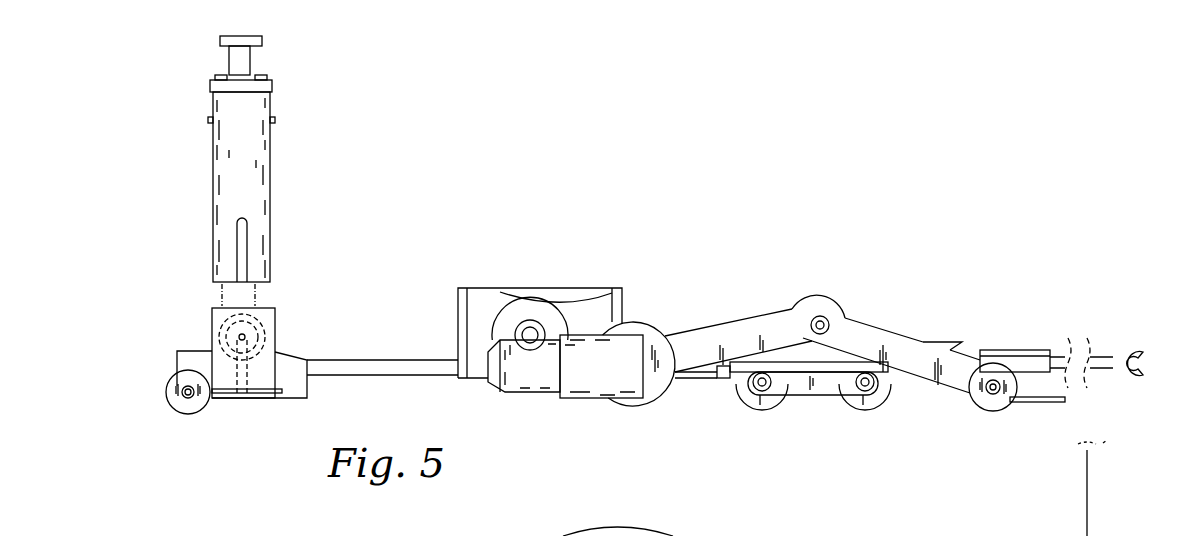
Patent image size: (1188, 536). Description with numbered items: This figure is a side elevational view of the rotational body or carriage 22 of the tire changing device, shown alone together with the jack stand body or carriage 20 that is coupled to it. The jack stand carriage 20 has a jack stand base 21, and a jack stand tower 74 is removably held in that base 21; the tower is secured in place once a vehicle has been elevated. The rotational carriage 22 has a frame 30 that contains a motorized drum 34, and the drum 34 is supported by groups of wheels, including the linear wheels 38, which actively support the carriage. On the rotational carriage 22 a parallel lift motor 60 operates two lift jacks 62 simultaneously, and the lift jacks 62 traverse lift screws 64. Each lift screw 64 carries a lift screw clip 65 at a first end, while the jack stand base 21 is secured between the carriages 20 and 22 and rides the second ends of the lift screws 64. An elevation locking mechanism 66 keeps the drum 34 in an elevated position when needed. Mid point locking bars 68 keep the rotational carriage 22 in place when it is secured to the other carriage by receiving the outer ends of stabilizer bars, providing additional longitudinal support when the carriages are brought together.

The jack stand body or carriage 20 is at (305, 243).
The jack stand base 21 is at (274, 323).
The rotational body or carriage 22 is at (682, 262).
The frame 30 is at (911, 338).
The motorized drum 34 is at (820, 297).
The linear wheels 38 is at (783, 406).
The parallel lift motor 60 is at (537, 300).
The lift jacks 62 is at (512, 393).
The lift screws 64 is at (397, 360).
The lift screw clip 65 is at (1127, 351).
The elevation locking mechanism 66 is at (943, 342).
The mid point locking bars 68 is at (1010, 350).
The jack stand tower 74 is at (272, 148).